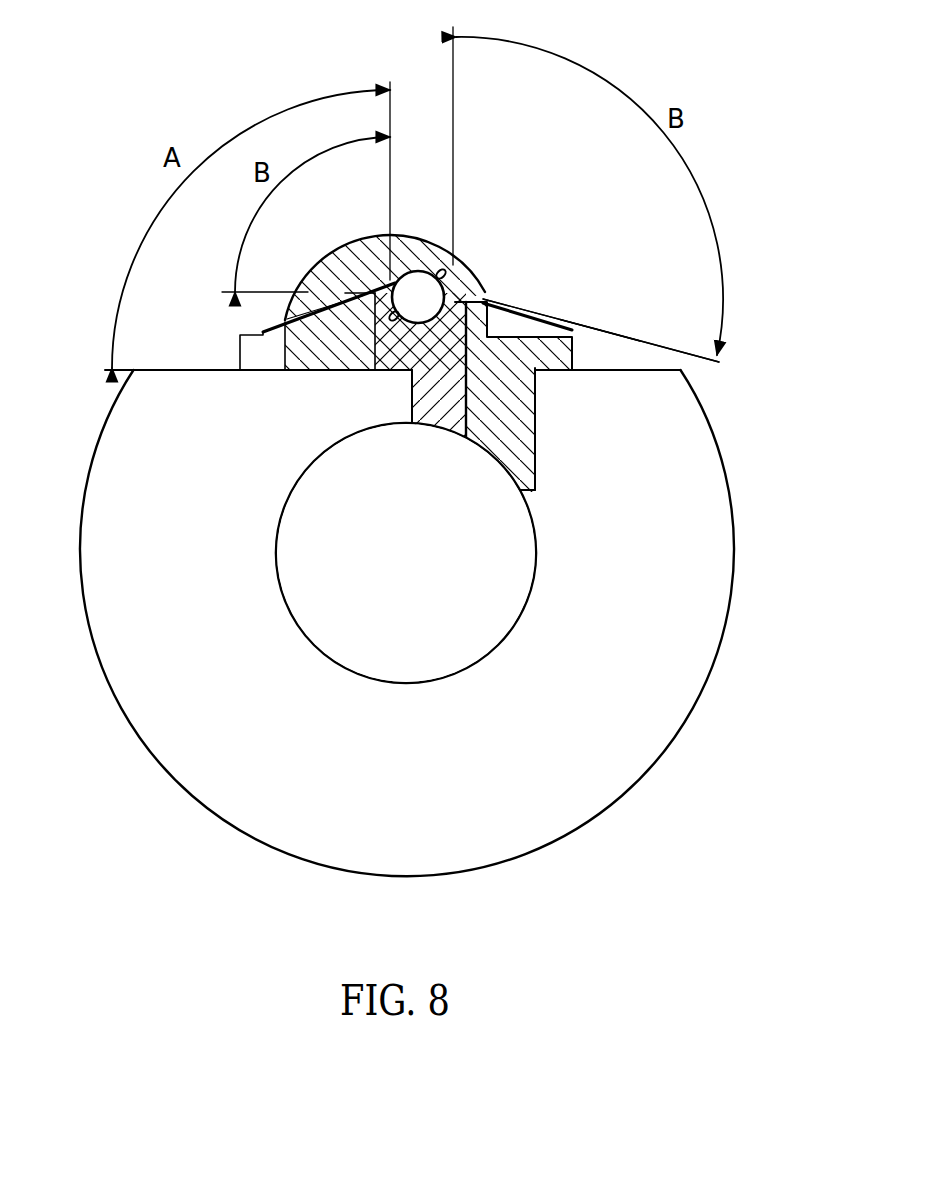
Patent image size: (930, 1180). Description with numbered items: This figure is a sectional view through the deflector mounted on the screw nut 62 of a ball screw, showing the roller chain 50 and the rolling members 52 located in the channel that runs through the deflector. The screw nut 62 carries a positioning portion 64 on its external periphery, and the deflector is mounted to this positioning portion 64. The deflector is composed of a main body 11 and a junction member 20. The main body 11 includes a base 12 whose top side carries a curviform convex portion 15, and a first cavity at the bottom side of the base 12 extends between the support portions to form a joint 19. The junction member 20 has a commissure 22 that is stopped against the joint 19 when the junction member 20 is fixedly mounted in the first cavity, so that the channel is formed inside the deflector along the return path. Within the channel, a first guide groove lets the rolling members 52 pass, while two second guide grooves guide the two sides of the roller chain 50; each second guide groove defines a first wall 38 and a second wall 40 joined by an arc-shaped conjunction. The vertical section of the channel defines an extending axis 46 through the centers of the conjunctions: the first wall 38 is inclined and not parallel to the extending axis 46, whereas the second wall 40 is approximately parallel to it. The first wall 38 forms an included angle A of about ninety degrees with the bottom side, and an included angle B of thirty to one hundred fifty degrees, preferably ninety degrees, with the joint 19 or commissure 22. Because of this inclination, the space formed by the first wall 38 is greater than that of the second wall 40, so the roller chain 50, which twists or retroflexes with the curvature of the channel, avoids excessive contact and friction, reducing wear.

The main body 11 is at (507, 306).
The base 12 is at (575, 349).
The convex portion 15 is at (484, 278).
The joint 19 is at (457, 290).
The commissure 22 is at (541, 244).
The junction member 20 is at (427, 398).
The first wall 38 is at (373, 321).
The second wall 40 is at (397, 279).
The extending axis 46 is at (535, 378).
The roller chain 50 is at (439, 268).
The rolling members 52 is at (400, 276).
The screw nut 62 is at (731, 622).
The positioning portion 64 is at (635, 369).